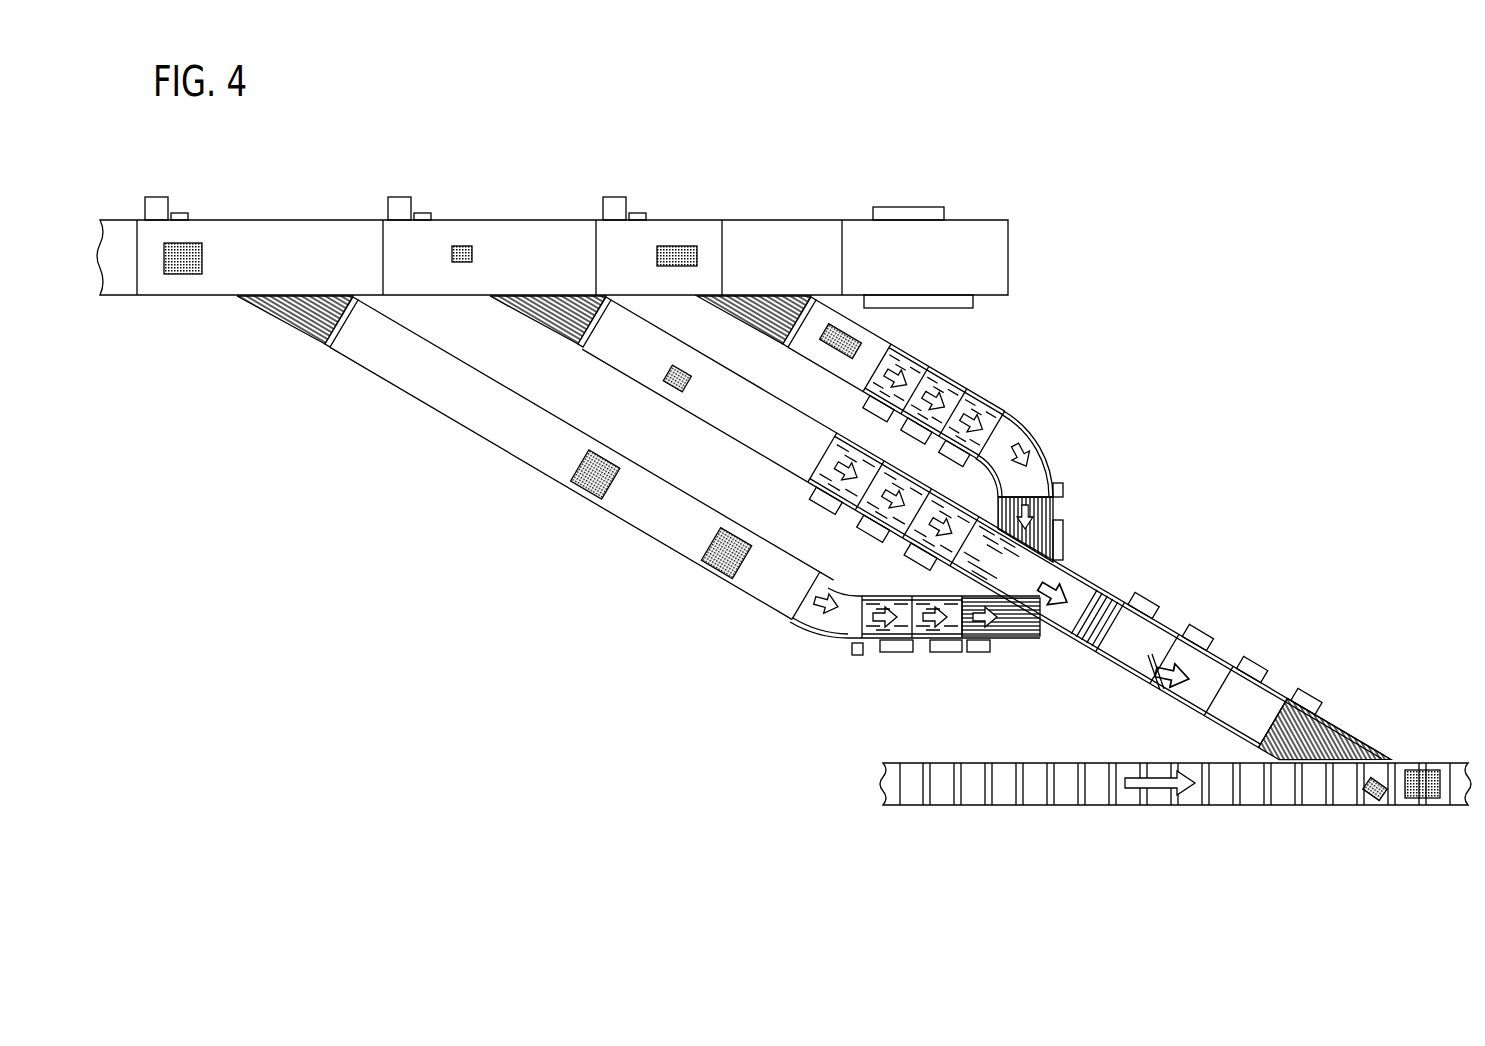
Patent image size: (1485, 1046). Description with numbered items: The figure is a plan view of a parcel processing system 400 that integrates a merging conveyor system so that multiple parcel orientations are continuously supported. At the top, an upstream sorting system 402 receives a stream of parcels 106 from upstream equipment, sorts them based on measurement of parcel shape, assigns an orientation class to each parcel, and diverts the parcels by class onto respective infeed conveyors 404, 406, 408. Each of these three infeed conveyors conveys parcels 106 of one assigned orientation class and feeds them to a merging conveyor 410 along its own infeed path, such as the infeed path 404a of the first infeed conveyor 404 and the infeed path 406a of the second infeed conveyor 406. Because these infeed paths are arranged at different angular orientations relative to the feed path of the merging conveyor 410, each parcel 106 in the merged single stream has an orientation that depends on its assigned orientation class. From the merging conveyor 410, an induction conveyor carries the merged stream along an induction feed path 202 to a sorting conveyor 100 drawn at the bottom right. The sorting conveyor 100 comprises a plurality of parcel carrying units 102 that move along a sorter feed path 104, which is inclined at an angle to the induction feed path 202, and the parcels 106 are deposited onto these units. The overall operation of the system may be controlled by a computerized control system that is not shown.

The parcel processing system 400 is at (1088, 175).
The upstream sorting system 402 is at (270, 212).
The infeed conveyor 404 is at (765, 630).
The infeed path 404a is at (988, 625).
The infeed conveyor 406 is at (1043, 417).
The infeed path 406a is at (1031, 519).
The infeed conveyor 408 is at (721, 441).
The merging conveyor 410 is at (1106, 581).
The induction feed path 202 is at (1158, 671).
The sorting conveyor 100 is at (1102, 821).
The parcel carrying units 102 is at (975, 786).
The sorter feed path 104 is at (1160, 786).
The parcels 106 is at (463, 246).